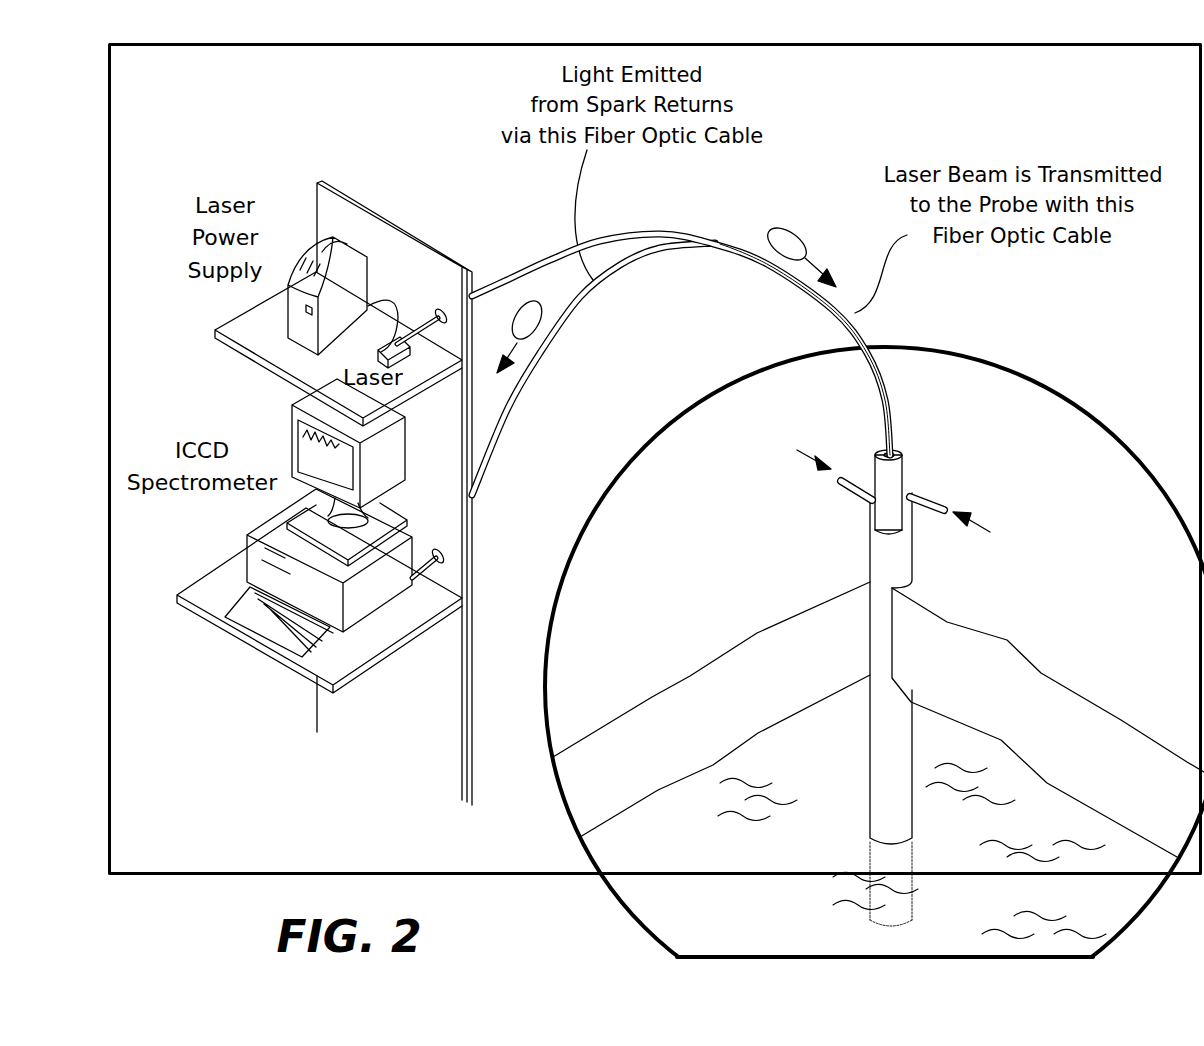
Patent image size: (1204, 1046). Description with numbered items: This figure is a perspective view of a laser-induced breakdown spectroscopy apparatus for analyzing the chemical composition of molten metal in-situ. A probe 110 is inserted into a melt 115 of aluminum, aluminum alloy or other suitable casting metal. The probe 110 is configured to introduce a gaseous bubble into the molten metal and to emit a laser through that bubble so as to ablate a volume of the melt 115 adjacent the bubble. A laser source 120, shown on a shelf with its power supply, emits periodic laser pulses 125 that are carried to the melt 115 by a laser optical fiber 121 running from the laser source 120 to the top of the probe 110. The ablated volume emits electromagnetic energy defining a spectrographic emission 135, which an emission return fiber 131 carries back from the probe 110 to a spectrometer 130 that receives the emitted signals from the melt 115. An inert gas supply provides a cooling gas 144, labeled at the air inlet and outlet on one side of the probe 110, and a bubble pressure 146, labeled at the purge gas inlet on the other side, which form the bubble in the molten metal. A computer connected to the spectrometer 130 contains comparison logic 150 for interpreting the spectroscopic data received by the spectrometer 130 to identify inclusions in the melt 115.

The probe 110 is at (880, 757).
The melt 115 is at (724, 933).
The laser source 120 is at (410, 335).
The laser optical fiber 121 is at (543, 257).
The laser pulses 125 is at (783, 231).
The spectrometer 130 is at (377, 602).
The emission return fiber 131 is at (515, 410).
The spectrographic emission 135 is at (537, 327).
The cooling gas 144 is at (938, 490).
The bubble pressure 146 is at (848, 488).
The comparison logic 150 is at (283, 691).